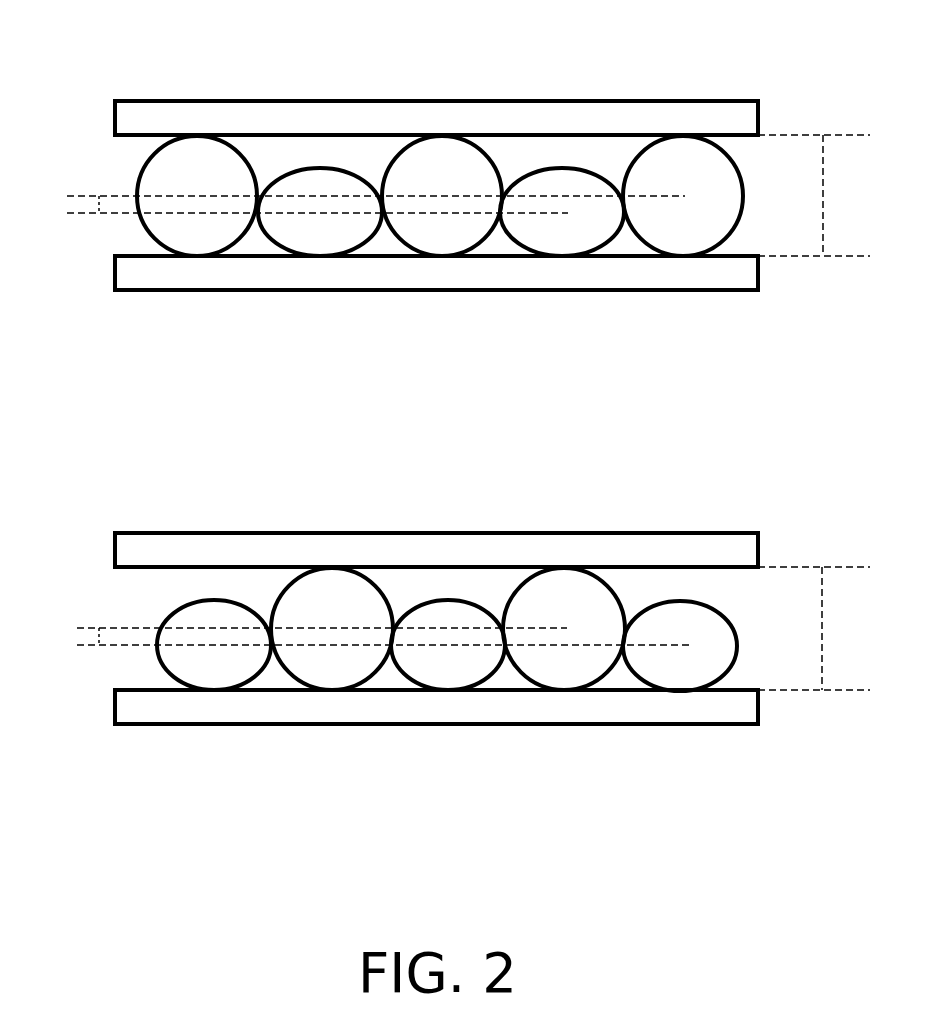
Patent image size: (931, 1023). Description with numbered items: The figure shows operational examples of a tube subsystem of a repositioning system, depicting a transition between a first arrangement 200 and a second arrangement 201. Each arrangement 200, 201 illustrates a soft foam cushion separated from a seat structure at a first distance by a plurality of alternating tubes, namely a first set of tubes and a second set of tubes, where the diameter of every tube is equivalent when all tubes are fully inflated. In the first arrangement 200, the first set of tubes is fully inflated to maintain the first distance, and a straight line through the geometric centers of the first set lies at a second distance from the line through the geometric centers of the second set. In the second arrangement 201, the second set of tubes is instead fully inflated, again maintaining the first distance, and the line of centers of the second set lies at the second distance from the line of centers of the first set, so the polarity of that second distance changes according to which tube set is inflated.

The first arrangement 200 is at (440, 231).
The second arrangement 201 is at (449, 669).